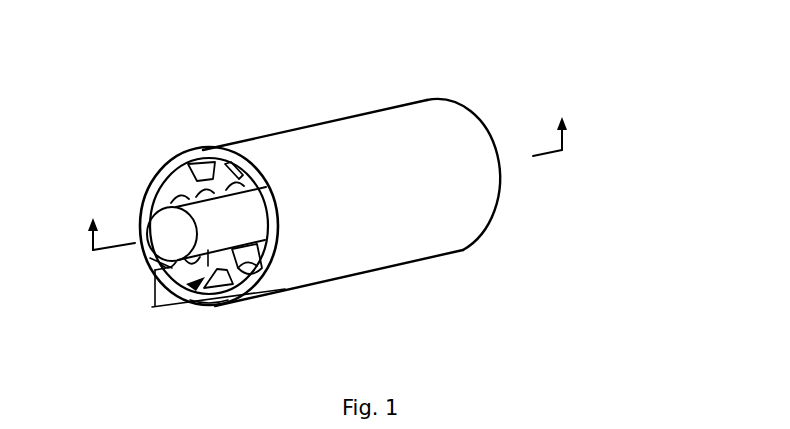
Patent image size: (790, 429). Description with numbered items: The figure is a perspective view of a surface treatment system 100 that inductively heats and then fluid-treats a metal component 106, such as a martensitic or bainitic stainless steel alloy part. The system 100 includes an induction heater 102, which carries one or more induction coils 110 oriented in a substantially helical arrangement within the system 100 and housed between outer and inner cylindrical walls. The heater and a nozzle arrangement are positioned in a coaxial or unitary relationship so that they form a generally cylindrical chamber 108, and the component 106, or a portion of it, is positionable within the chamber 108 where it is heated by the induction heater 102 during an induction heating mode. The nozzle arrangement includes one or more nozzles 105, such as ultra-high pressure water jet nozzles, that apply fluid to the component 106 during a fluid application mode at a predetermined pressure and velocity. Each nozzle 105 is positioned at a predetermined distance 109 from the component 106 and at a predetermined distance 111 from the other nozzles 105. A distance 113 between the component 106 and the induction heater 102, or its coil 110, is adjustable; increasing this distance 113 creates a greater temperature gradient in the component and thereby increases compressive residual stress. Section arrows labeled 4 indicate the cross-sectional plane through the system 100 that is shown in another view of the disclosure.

The system 100 is at (364, 75).
The induction heater 102 is at (251, 133).
The nozzles 105 is at (188, 177).
The metal component 106 is at (163, 216).
The chamber 108 is at (191, 289).
The predetermined distance 109 is at (165, 264).
The induction coil 110 is at (226, 306).
The predetermined distance 111 is at (240, 278).
The distance 113 is at (153, 289).
The section line 4 is at (326, 182).